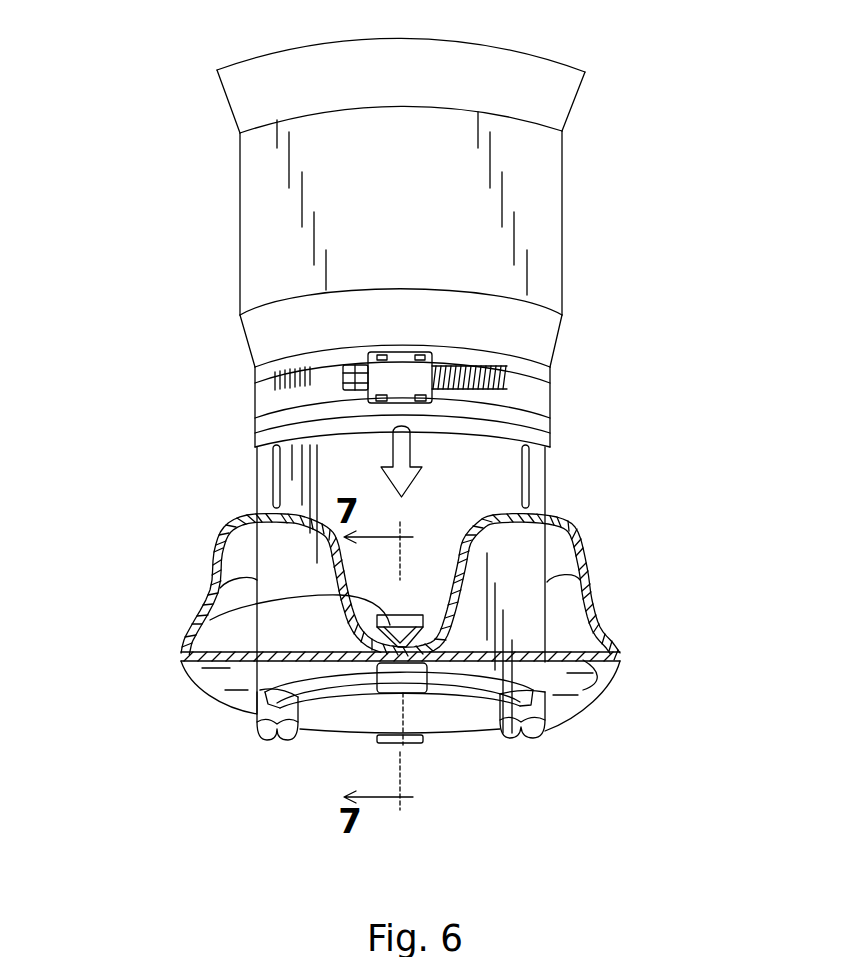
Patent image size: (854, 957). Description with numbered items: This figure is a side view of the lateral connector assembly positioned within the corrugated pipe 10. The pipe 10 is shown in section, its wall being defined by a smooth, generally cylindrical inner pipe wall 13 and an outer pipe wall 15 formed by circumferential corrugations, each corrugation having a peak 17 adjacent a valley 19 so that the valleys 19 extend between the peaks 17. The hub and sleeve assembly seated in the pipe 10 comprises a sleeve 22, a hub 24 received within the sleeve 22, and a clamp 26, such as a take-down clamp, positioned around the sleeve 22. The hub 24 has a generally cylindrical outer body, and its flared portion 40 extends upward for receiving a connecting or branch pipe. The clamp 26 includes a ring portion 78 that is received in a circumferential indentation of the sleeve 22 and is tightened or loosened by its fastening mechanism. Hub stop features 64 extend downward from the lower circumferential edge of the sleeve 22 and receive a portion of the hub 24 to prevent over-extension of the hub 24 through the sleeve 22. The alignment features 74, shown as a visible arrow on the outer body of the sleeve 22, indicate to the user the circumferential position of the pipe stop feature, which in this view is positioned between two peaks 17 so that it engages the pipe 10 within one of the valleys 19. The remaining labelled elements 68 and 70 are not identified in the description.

The corrugated pipe 10 is at (580, 533).
The inner pipe wall 13 is at (603, 687).
The outer pipe wall 15 is at (600, 598).
The peak 17 is at (567, 518).
The valley 19 is at (380, 658).
The sleeve 22 is at (255, 478).
The hub 24 is at (550, 202).
The clamp 26 is at (552, 392).
The flared portion 40 is at (223, 100).
The hub stop feature 64 is at (273, 740).
The inner wall 68 is at (193, 618).
The fastener 70 is at (425, 677).
The alignment features 74 is at (412, 448).
The ring portion 78 is at (555, 412).